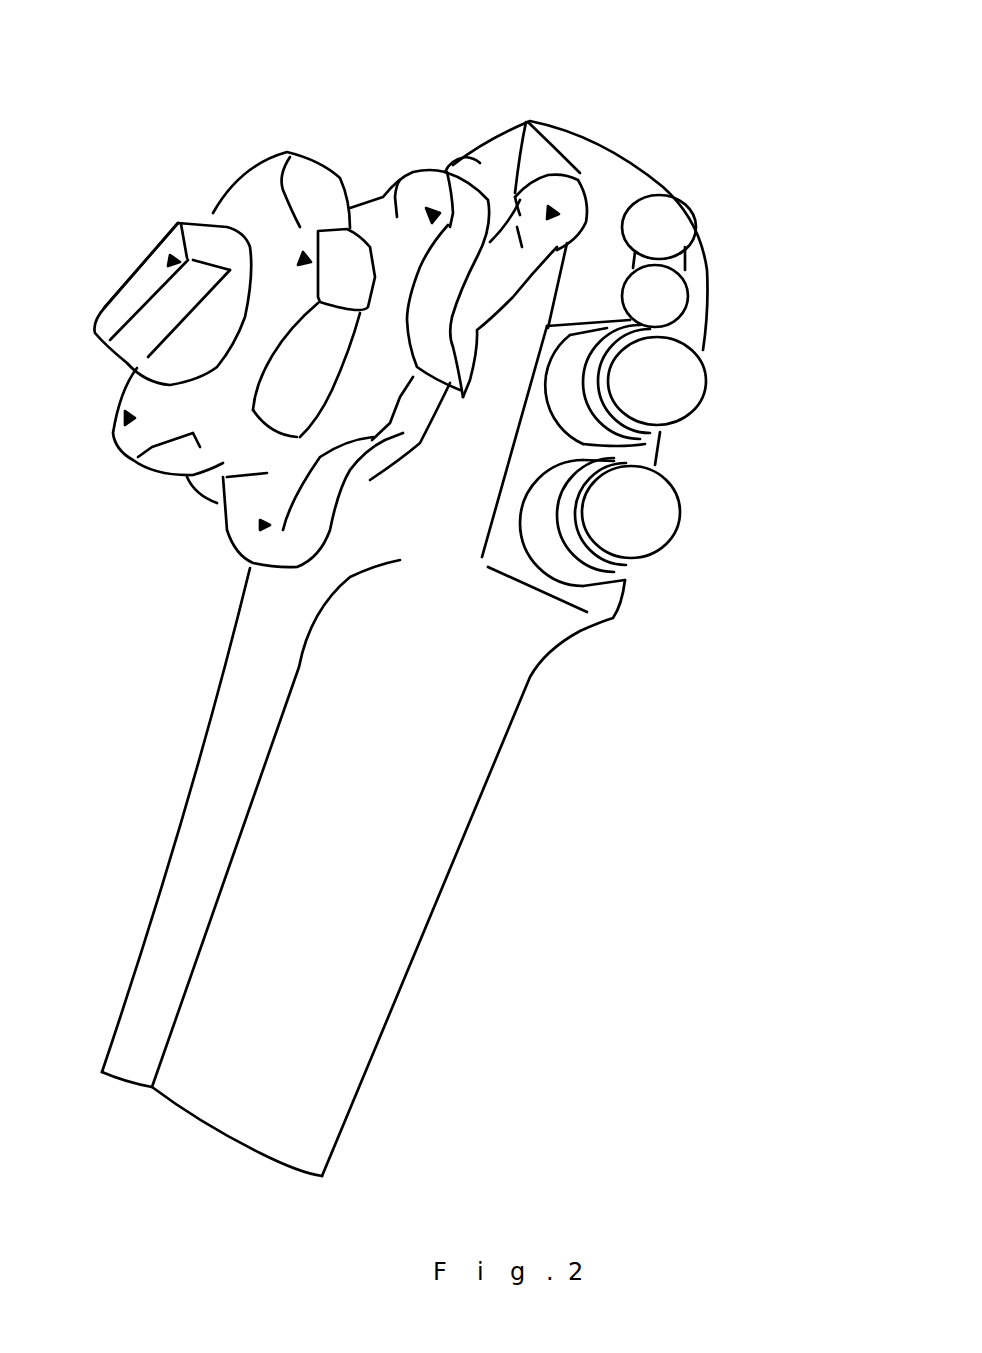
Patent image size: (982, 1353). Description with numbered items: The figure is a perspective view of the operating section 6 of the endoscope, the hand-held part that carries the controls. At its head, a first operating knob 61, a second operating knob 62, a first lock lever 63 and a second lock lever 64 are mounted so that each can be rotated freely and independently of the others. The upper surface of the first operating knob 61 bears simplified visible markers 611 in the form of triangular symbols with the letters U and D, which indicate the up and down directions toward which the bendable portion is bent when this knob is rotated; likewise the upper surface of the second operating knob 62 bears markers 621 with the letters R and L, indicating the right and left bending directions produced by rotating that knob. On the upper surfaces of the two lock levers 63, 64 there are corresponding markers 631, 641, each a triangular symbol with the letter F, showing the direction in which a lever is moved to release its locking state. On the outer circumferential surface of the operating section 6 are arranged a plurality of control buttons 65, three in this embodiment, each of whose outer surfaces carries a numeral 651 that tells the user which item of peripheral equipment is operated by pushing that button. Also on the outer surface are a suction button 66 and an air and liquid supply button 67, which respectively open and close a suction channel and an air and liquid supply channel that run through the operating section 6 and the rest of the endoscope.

The operating section 6 is at (562, 805).
The first operating knob 61 is at (397, 178).
The simplified symbols "ΔU" and "ΔD" 611 is at (247, 537).
The second operating knob 62 is at (268, 168).
The simplified symbols "ΔR" and "ΔL" 621 is at (128, 440).
The first lock lever 63 is at (583, 177).
The simplified symbol "ΔF" 631 is at (537, 126).
The second lock lever 64 is at (122, 300).
The simplified symbol "ΔF" 641 is at (160, 257).
The control button 65 is at (460, 162).
The numeral (visible marker) 651 is at (680, 292).
The suction button 66 is at (687, 380).
The air and liquid supply button 67 is at (657, 507).